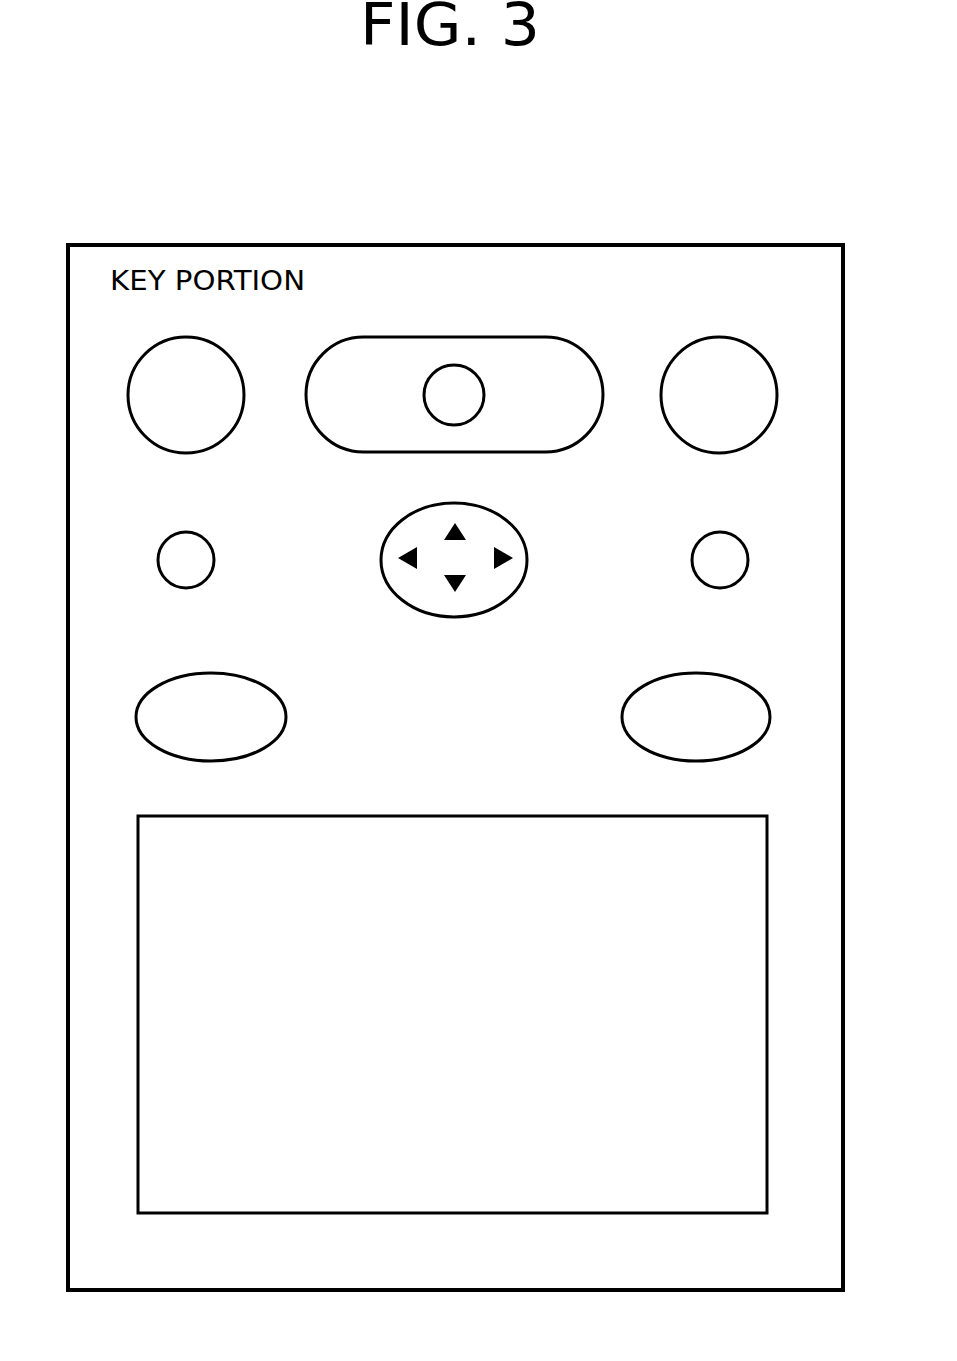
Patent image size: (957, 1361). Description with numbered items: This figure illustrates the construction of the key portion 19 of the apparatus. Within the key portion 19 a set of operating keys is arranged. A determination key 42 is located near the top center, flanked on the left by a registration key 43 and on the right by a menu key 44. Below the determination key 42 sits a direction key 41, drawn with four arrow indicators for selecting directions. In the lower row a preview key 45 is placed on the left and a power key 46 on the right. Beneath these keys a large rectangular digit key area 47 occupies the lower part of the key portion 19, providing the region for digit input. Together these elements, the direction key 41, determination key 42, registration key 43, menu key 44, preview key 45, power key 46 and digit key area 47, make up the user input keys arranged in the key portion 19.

The key portion 19 is at (707, 243).
The direction key 41 is at (533, 546).
The determination key 42 is at (480, 337).
The registration key 43 is at (231, 352).
The menu key 44 is at (750, 344).
The preview key 45 is at (247, 674).
The power key 46 is at (752, 683).
The digit key area 47 is at (422, 816).